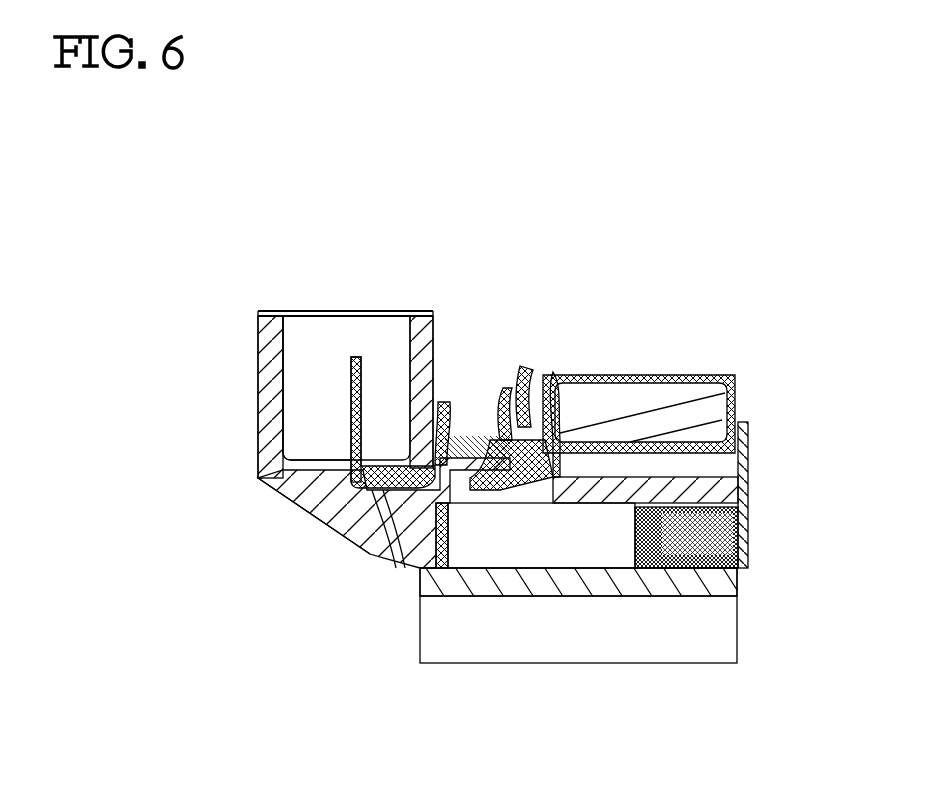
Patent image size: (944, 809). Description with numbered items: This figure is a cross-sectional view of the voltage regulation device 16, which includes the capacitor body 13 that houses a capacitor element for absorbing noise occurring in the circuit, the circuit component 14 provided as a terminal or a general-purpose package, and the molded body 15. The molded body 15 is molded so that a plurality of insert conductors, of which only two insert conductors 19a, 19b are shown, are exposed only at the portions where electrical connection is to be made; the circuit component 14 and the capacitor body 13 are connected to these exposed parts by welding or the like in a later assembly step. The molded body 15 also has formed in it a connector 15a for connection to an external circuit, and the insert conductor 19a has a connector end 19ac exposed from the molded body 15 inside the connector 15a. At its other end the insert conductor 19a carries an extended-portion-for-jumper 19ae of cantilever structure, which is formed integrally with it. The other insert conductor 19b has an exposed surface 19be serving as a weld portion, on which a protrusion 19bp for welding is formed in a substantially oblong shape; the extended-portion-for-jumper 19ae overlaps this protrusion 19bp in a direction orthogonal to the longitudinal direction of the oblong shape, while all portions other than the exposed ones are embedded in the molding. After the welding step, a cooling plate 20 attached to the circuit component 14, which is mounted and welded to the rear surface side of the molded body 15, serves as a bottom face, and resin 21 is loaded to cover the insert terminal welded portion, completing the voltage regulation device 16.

The capacitor body 13 is at (703, 375).
The circuit component 14 is at (594, 547).
The molded body 15 is at (752, 478).
The connector 15a is at (258, 383).
The voltage regulation device 16 is at (330, 556).
The insert conductor 19a is at (445, 232).
The connector end 19ac is at (355, 357).
The extended-portion-for-jumper 19ae is at (483, 430).
The insert conductor 19b is at (683, 267).
The protrusion 19bp is at (495, 437).
The exposed surface 19be is at (543, 432).
The cooling plate 20 is at (683, 578).
The resin 21 is at (745, 518).